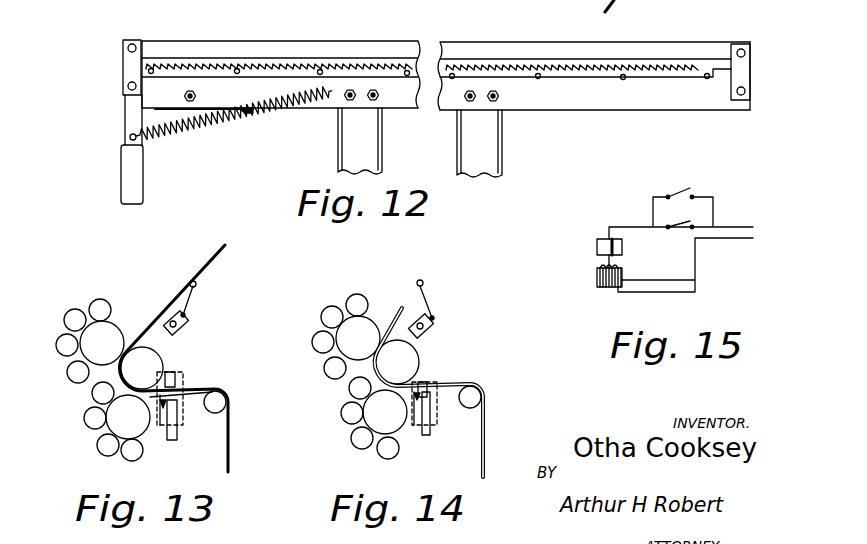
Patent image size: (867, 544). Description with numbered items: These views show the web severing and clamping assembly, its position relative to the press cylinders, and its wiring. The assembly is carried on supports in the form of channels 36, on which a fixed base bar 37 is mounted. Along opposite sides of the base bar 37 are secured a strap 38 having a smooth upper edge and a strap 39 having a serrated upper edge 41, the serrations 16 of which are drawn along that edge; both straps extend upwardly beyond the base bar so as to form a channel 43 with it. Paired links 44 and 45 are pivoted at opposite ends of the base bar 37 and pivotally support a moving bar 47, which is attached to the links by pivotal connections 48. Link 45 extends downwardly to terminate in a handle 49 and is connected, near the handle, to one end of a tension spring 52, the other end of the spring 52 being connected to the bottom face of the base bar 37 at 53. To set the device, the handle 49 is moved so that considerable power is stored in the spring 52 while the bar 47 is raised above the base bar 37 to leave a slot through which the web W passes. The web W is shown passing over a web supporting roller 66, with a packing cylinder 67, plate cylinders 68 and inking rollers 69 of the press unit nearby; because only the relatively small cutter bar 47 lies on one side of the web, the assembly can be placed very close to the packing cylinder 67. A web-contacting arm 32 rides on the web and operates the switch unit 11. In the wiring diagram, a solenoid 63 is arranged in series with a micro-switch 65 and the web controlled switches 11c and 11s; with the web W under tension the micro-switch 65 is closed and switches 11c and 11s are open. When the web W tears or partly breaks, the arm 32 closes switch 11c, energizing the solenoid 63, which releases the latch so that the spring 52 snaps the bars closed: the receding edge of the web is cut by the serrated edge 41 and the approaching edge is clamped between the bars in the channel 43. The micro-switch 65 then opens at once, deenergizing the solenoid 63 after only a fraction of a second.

In FIG. 12, the pivotal connections 48 is at (137, 43).
In FIG. 12, the moving bar 47 is at (245, 52).
In FIG. 13, the moving bar 47 is at (174, 378).
In FIG. 14, the moving bar 47 is at (428, 387).
In FIG. 12, the rack teeth 16 is at (322, 70).
In FIG. 12, the serrated upper edge 41 is at (507, 65).
In FIG. 12, the link 44 is at (738, 78).
In FIG. 12, the link 45 is at (133, 62).
In FIG. 12, the fixed base bar 37 is at (605, 93).
In FIG. 13, the fixed base bar 37 is at (173, 437).
In FIG. 14, the fixed base bar 37 is at (429, 435).
In FIG. 12, the channels 36 is at (482, 142).
In FIG. 12, the strap 39 is at (280, 73).
In FIG. 13, the strap 39 is at (167, 410).
In FIG. 14, the strap 39 is at (420, 410).
In FIG. 12, the tension spring 52 is at (172, 128).
In FIG. 12, the spring connection 53 is at (245, 113).
In FIG. 12, the handle 49 is at (132, 178).
In FIG. 13, the plate cylinders 68 is at (104, 338).
In FIG. 14, the plate cylinders 68 is at (360, 335).
In FIG. 13, the inking rollers 69 is at (93, 417).
In FIG. 14, the inking rollers 69 is at (353, 412).
In FIG. 13, the packing cylinder 67 is at (143, 367).
In FIG. 14, the packing cylinder 67 is at (398, 365).
In FIG. 13, the web W is at (232, 445).
In FIG. 14, the web W is at (486, 421).
In FIG. 13, the channel 43 is at (196, 391).
In FIG. 13, the web supporting roller 66 is at (219, 402).
In FIG. 14, the web supporting roller 66 is at (474, 398).
In FIG. 13, the web-contacting arm 32 is at (196, 287).
In FIG. 14, the web-contacting arm 32 is at (426, 287).
In FIG. 13, the switch 11 is at (187, 323).
In FIG. 14, the switch 11 is at (436, 323).
In FIG. 13, the strap 38 is at (176, 403).
In FIG. 14, the strap 38 is at (426, 398).
In FIG. 15, the switch 11s is at (682, 190).
In FIG. 15, the control switch 11c is at (684, 224).
In FIG. 15, the micro-switch 65 is at (597, 247).
In FIG. 15, the solenoid 63 is at (607, 290).